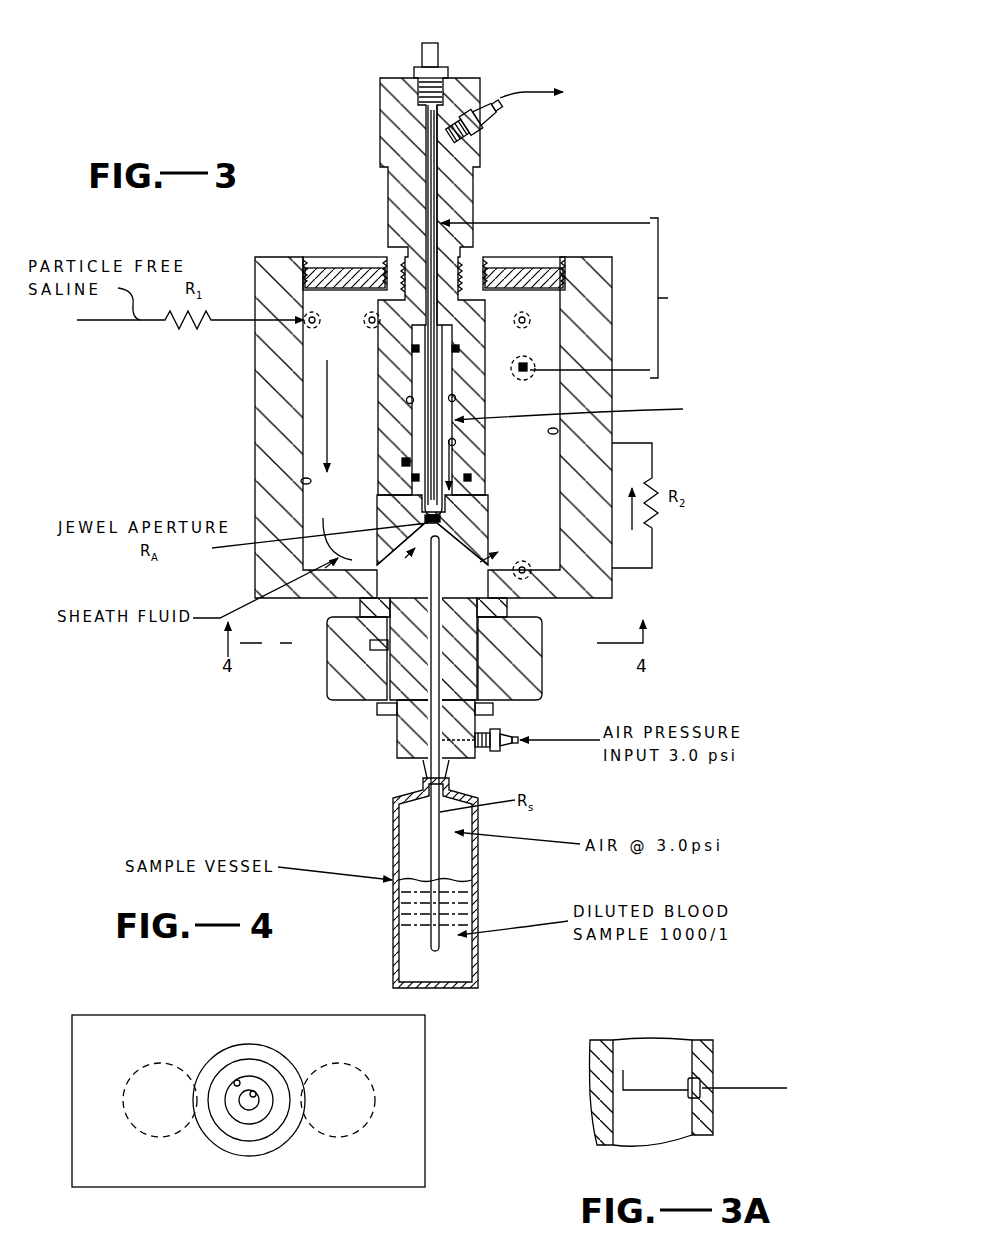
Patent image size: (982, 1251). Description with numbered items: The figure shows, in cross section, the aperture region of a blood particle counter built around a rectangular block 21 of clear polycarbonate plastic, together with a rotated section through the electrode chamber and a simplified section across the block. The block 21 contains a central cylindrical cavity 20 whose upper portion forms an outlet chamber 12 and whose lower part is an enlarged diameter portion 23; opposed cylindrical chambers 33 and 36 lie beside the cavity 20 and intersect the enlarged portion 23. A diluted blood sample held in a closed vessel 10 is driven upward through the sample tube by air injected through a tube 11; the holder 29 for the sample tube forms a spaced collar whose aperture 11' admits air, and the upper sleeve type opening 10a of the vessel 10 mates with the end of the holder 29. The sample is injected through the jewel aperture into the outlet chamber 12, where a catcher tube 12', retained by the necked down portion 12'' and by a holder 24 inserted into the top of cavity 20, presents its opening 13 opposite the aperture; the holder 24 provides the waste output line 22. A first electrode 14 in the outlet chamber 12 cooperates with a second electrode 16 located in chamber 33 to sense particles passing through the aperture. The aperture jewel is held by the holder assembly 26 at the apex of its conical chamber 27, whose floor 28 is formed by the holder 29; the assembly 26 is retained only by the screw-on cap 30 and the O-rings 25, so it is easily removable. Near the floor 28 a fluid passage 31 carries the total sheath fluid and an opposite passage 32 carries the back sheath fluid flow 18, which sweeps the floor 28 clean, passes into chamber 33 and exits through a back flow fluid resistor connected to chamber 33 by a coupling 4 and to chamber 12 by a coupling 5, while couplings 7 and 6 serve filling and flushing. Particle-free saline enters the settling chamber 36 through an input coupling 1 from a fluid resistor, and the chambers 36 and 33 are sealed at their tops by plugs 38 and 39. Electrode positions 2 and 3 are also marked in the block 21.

In FIG. 3, the input coupling 1 is at (316, 309).
In FIG. 3, the second electrode 2 is at (366, 309).
In FIG. 3, the third electrode 3 is at (517, 309).
In FIG. 3, the coupling 4 is at (528, 563).
In FIG. 3, the coupling 5 is at (456, 443).
In FIG. 3, the coupling 6 is at (456, 398).
In FIG. 3, the coupling 7 is at (406, 401).
In FIG. 3, the vessel 10 is at (478, 893).
In FIG. 3, the upper sleeve type opening 10a is at (425, 776).
In FIG. 3, the tube 11 is at (515, 728).
In FIG. 3, the aperture 11' is at (478, 761).
In FIG. 3, the outlet chamber 12 is at (387, 305).
In FIG. 4, the outlet chamber 12 is at (227, 1078).
In FIG. 3, the catcher tube 12' is at (493, 465).
In FIG. 3, the necked down portion 12'' is at (475, 420).
In FIG. 4, the necked down portion 12'' is at (285, 1071).
In FIG. 3, the opening 13 is at (441, 516).
In FIG. 3, the first electrode 14 is at (528, 223).
In FIG. 3, the second electrode 16 is at (530, 368).
In FIG. 3A, the second electrode 16 is at (642, 1088).
In FIG. 3, the back sheath fluid flow 18 is at (635, 414).
In FIG. 3, the central cylindrical cavity 20 is at (402, 460).
In FIG. 4, the central cylindrical cavity 20 is at (233, 1130).
In FIG. 3, the rectangular block 21 is at (262, 427).
In FIG. 4, the rectangular block 21 is at (215, 1015).
In FIG. 3A, the rectangular block 21 is at (705, 1050).
In FIG. 3, the waste output line 22 is at (505, 111).
In FIG. 3, the enlarged diameter lower portion 23 is at (468, 532).
In FIG. 4, the enlarged diameter lower portion 23 is at (280, 1145).
In FIG. 3, the holder 24 is at (415, 263).
In FIG. 3, the O-rings 25 is at (394, 491).
In FIG. 3, the holder assembly 26 is at (380, 516).
In FIG. 3, the conical chamber 27 is at (456, 556).
In FIG. 3, the floor 28 is at (528, 622).
In FIG. 3, the holder 29 is at (398, 742).
In FIG. 3, the screw-on cap 30 is at (330, 678).
In FIG. 3, the fluid passage 31 is at (360, 605).
In FIG. 3, the passage 32 is at (512, 607).
In FIG. 3, the chamber 33 is at (558, 432).
In FIG. 4, the chamber 33 is at (375, 1080).
In FIG. 3A, the chamber 33 is at (660, 1126).
In FIG. 3, the settling chamber 36 is at (302, 481).
In FIG. 4, the settling chamber 36 is at (150, 1065).
In FIG. 3, the plug 38 is at (340, 268).
In FIG. 3, the plug 39 is at (535, 270).